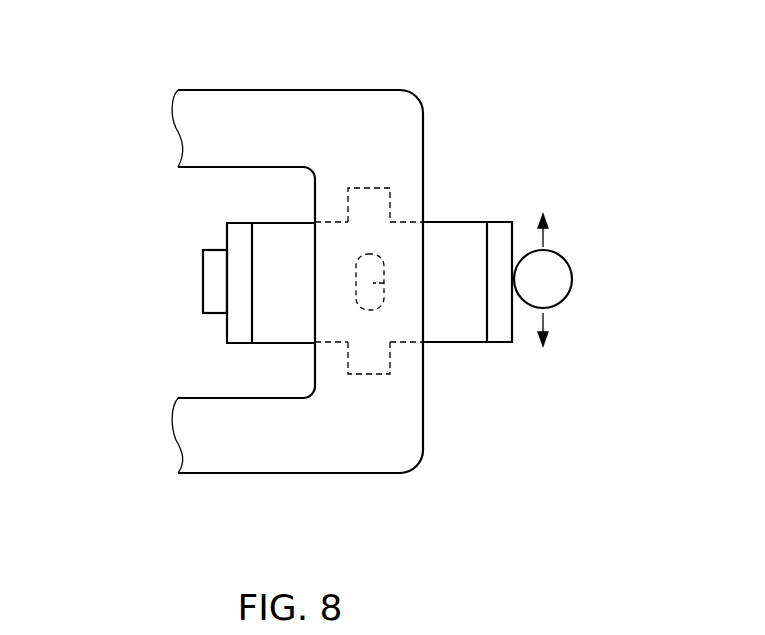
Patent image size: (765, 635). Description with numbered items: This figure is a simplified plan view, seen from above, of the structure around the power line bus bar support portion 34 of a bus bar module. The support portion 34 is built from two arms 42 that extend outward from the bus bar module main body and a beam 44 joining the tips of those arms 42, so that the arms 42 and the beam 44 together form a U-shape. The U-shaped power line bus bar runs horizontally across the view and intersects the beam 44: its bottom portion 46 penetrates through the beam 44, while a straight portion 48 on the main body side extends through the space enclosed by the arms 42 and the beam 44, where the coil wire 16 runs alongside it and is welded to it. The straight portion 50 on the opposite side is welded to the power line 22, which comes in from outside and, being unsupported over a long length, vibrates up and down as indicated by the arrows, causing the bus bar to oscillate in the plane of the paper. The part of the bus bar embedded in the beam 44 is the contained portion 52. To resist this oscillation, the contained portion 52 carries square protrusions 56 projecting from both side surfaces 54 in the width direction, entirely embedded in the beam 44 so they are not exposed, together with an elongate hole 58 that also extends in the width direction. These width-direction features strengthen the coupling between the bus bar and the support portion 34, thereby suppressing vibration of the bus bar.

The coil wire 16 is at (213, 272).
The power line 22 is at (553, 270).
The support portion 34 is at (343, 474).
The arms 42 is at (253, 108).
The beam 44 is at (413, 400).
The bottom portion 46 is at (445, 335).
The straight portion 48 is at (232, 330).
The straight portion 50 is at (510, 333).
The contained portion 52 is at (404, 237).
The side surfaces 54 is at (278, 220).
The protrusions 56 is at (370, 192).
The elongate hole 58 is at (385, 270).